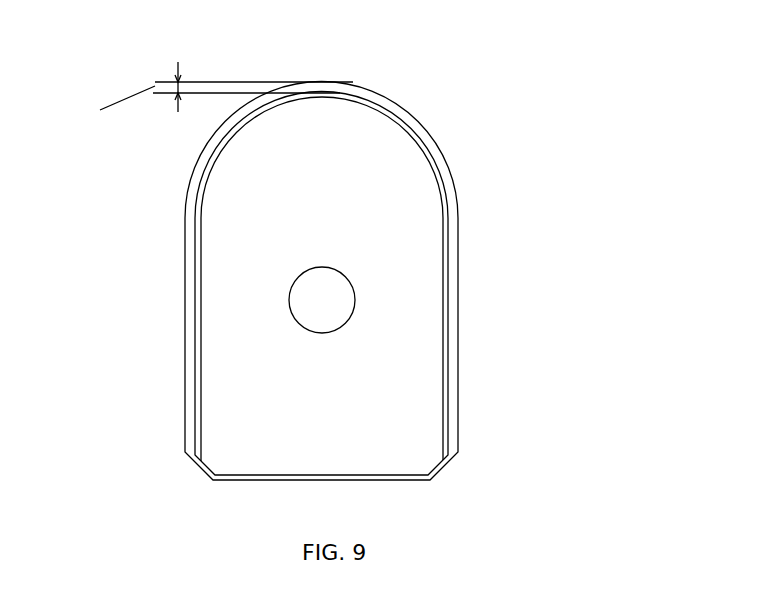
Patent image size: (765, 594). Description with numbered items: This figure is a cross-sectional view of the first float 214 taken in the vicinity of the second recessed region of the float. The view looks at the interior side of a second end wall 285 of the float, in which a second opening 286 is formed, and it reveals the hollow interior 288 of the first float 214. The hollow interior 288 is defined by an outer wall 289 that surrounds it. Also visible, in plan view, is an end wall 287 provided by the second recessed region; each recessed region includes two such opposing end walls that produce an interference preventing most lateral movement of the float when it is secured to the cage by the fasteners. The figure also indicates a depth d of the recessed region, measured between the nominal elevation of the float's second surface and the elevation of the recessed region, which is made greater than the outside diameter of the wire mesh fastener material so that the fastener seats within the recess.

The first float 214 is at (384, 255).
The second end wall 285 is at (335, 255).
The second opening 286 is at (343, 328).
The end wall 287 is at (352, 84).
The hollow interior 288 is at (256, 257).
The outer wall 289 is at (448, 168).